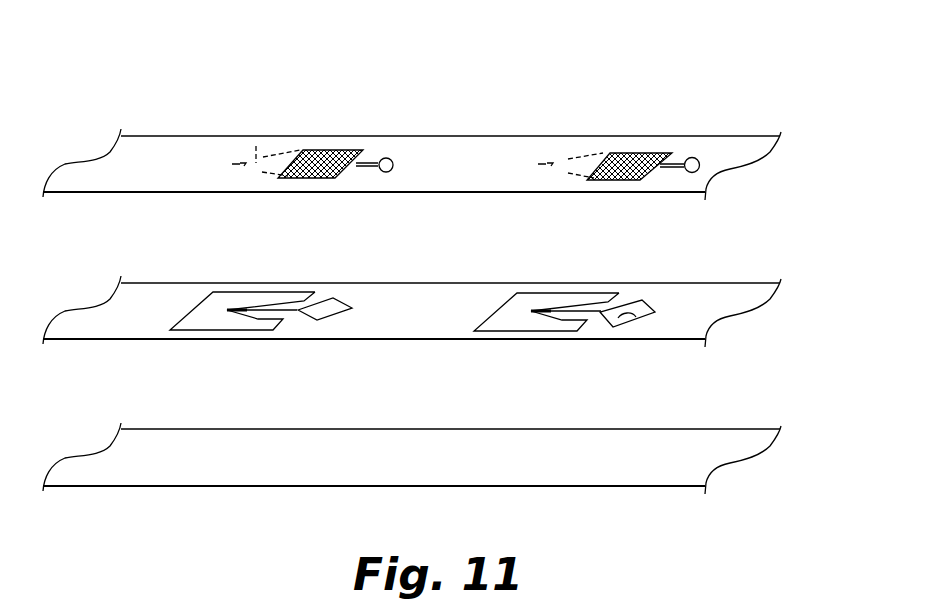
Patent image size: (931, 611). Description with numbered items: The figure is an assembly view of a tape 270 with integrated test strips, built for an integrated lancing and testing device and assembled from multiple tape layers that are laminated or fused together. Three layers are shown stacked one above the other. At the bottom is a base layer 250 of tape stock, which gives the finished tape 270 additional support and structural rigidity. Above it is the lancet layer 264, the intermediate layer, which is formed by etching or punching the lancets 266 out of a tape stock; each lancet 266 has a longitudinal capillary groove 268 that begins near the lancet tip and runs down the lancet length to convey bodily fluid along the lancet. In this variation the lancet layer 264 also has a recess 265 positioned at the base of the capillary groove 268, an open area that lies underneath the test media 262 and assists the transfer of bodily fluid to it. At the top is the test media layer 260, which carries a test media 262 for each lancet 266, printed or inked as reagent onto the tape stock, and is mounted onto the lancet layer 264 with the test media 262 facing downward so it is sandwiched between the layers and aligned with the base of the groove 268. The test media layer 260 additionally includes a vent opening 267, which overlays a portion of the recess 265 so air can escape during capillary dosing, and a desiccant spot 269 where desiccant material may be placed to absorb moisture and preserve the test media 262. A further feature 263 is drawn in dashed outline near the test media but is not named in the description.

The tape 270 is at (95, 109).
The test media layer 260 is at (733, 156).
The hidden outline of tab 263 is at (262, 138).
The vent opening 267 is at (366, 157).
The desiccant spot 269 is at (391, 158).
The test media 262 is at (620, 152).
The lancet layer 264 is at (677, 303).
The lancet 266 is at (588, 306).
The capillary groove 268 is at (572, 316).
The recess 265 is at (306, 319).
The base layer 250 is at (627, 464).